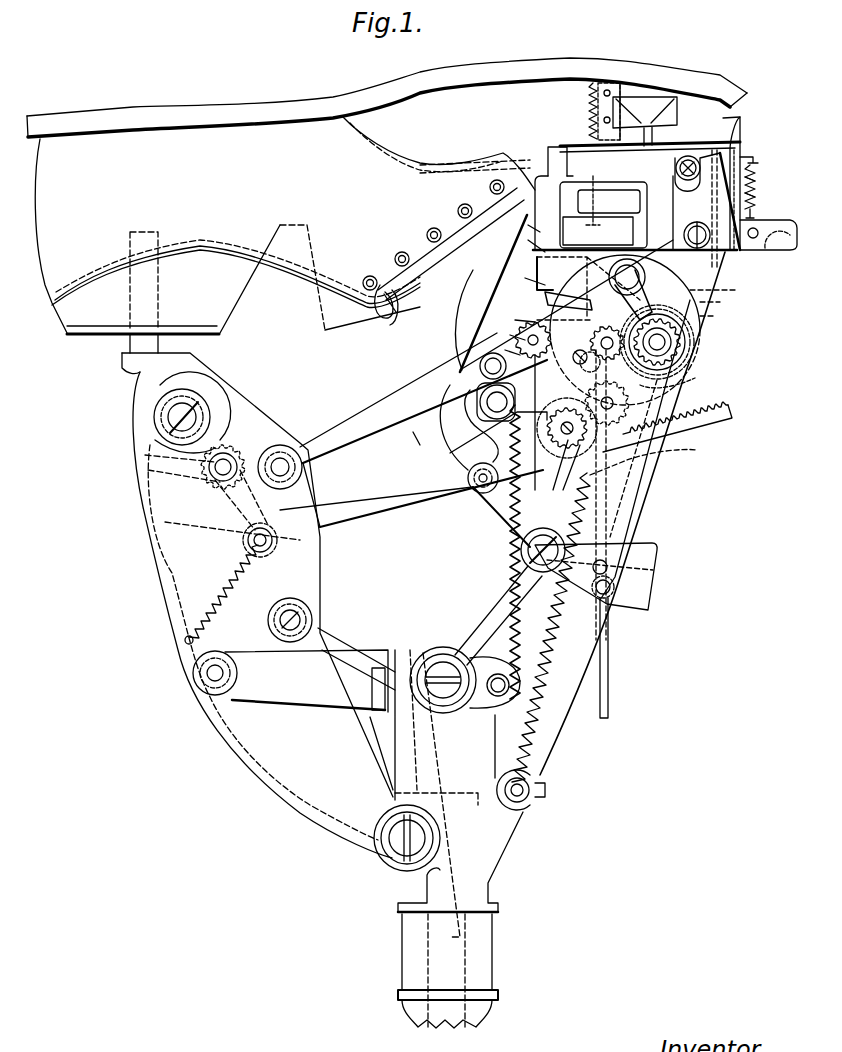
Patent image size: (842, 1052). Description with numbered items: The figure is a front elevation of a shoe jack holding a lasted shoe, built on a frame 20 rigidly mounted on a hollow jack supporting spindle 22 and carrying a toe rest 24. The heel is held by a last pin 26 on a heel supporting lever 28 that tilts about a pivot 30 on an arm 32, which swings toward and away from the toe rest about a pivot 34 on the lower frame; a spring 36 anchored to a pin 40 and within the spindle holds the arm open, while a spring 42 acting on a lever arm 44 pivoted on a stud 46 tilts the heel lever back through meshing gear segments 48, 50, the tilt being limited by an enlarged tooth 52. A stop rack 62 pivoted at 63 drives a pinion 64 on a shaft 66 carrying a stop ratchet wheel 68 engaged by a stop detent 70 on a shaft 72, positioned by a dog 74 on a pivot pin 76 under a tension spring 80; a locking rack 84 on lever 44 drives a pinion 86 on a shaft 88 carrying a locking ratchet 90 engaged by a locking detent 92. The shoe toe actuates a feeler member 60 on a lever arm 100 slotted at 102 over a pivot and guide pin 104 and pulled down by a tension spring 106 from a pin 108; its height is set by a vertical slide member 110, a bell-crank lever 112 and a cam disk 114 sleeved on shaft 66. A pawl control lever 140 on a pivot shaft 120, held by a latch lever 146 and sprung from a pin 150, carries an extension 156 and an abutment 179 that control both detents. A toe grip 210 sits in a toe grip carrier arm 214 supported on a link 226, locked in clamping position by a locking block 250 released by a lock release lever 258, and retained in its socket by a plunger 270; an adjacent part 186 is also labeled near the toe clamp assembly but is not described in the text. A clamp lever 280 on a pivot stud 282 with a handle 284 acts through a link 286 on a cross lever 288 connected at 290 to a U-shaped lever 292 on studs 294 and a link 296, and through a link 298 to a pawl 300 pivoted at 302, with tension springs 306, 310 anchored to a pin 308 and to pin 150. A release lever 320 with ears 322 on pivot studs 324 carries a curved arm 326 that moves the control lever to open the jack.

The frame 20 is at (640, 490).
The jack supporting spindle 22 is at (490, 948).
The toe rest 24 is at (742, 142).
The last pin 26 is at (135, 350).
The heel supporting lever 28 is at (140, 374).
The pivot 30 is at (160, 420).
The arm 32 is at (145, 555).
The pivot 34 is at (380, 845).
The spring 36 is at (340, 640).
The pin 40 is at (310, 612).
The spring 42 is at (200, 630).
The lever arm 44 is at (165, 520).
The stud 46 is at (243, 445).
The gear segment 48 is at (245, 430).
The gear segment 50 is at (185, 458).
The enlarged tooth 52 is at (195, 473).
The feeler member 60 is at (744, 119).
The stop rack 62 is at (356, 412).
The pivot 63 is at (305, 475).
The pinion 64 is at (700, 362).
The rotatable shaft 66 is at (700, 375).
The stop ratchet wheel 68 is at (700, 388).
The stop detent 70 is at (715, 316).
The shaft 72 is at (690, 350).
The dog 74 is at (720, 302).
The pivot pin 76 is at (636, 268).
The tension spring 80 is at (665, 285).
The locking rack 84 is at (402, 488).
The pinion 86 is at (575, 458).
The rotatable shaft 88 is at (560, 450).
The locking ratchet 90 is at (680, 450).
The locking detent 92 is at (540, 372).
The lever arm 100 is at (758, 170).
The slot 102 is at (758, 183).
The pivot and guide pin 104 is at (758, 195).
The tension spring 106 is at (758, 208).
The pin 108 is at (755, 156).
The vertical slide member 110 is at (740, 265).
The bell-crank lever 112 is at (735, 290).
The cam disk 114 is at (700, 420).
The pivot shaft 120 is at (606, 400).
The pawl control lever 140 is at (470, 348).
The latch lever 146 is at (525, 278).
The pin 150 is at (413, 436).
The extension 156 is at (510, 335).
The abutment 179 is at (505, 350).
The block 186 is at (552, 165).
The toe grip 210 is at (652, 105).
The toe grip carrier arm 214 is at (595, 142).
The lever arm or link 226 is at (603, 212).
The locking block 250 is at (640, 213).
The lock release lever 258 is at (540, 298).
The plunger 270 is at (552, 150).
The manually operable clamp lever 280 is at (306, 681).
The pivot stud 282 is at (448, 660).
The handle 284 is at (195, 680).
The link 286 is at (506, 608).
The cross lever 288 is at (500, 530).
The pivotal connection 290 is at (614, 585).
The U-shaped lever 292 is at (658, 565).
The studs 294 is at (522, 572).
The link 296 is at (612, 663).
The link 298 is at (470, 441).
The pawl 300 is at (470, 470).
The pivot 302 is at (477, 410).
The tension spring 306 is at (560, 752).
The pin 308 is at (505, 782).
The tension spring 310 is at (520, 552).
The manually operable release lever 320 is at (482, 368).
The ears 322 is at (528, 240).
The pivot studs 324 is at (528, 225).
The curved arm 326 is at (515, 320).